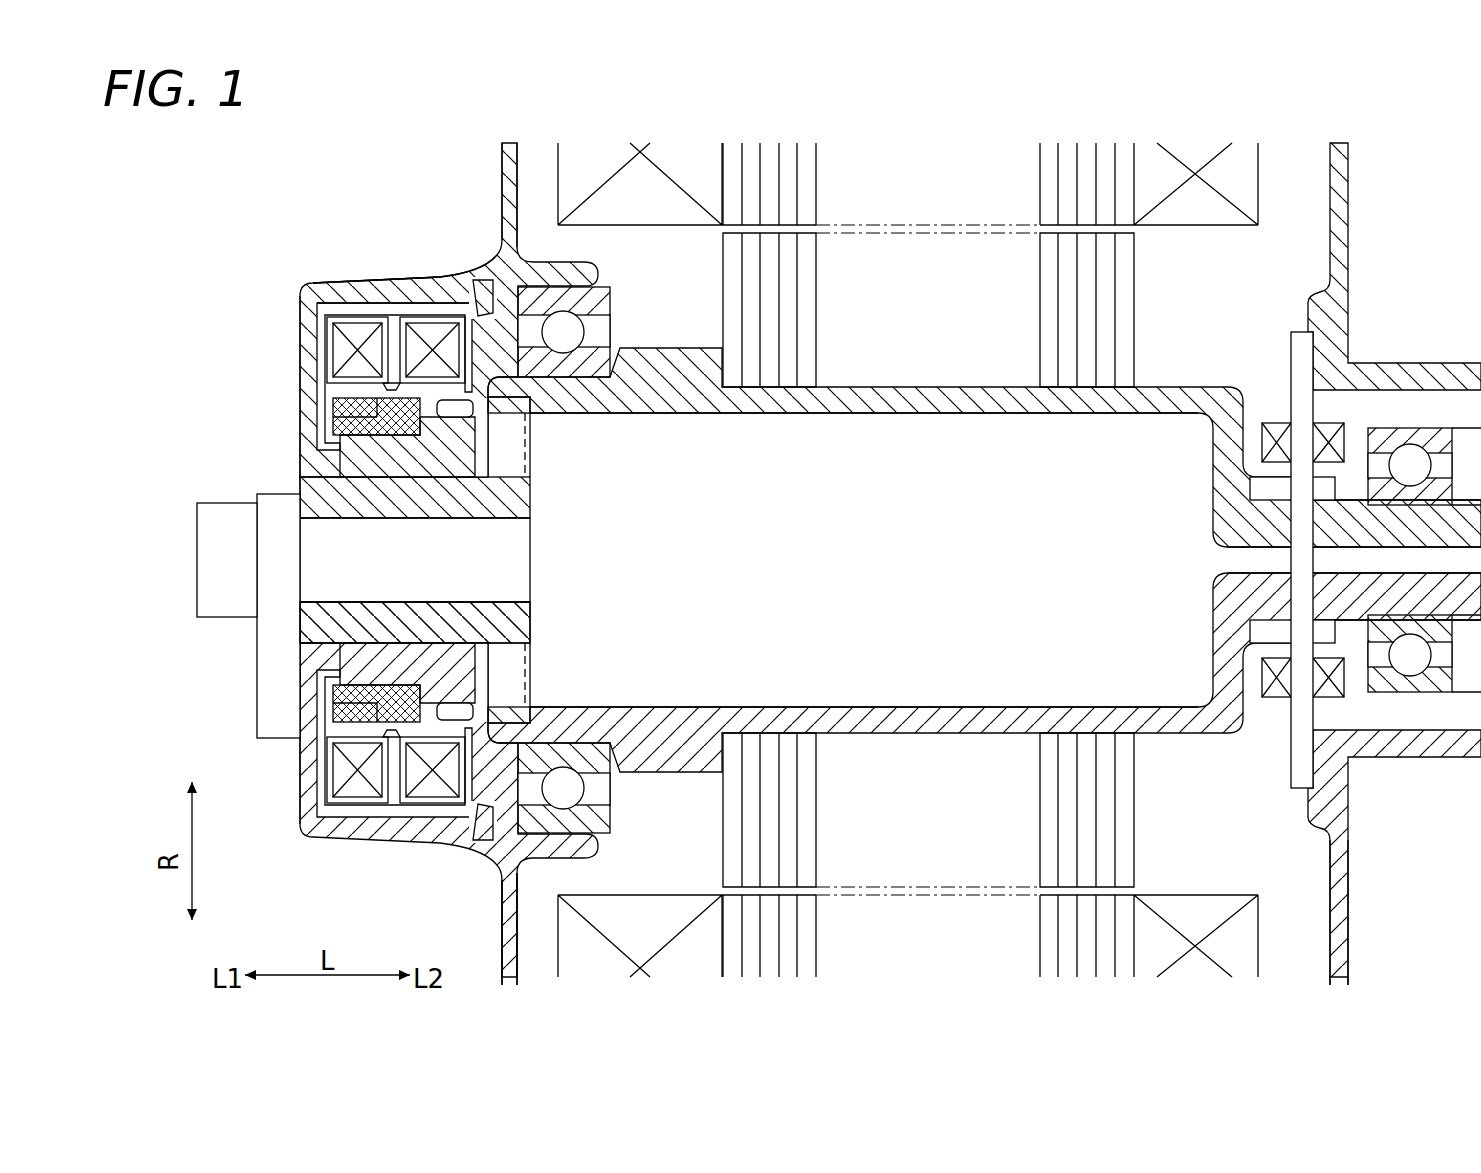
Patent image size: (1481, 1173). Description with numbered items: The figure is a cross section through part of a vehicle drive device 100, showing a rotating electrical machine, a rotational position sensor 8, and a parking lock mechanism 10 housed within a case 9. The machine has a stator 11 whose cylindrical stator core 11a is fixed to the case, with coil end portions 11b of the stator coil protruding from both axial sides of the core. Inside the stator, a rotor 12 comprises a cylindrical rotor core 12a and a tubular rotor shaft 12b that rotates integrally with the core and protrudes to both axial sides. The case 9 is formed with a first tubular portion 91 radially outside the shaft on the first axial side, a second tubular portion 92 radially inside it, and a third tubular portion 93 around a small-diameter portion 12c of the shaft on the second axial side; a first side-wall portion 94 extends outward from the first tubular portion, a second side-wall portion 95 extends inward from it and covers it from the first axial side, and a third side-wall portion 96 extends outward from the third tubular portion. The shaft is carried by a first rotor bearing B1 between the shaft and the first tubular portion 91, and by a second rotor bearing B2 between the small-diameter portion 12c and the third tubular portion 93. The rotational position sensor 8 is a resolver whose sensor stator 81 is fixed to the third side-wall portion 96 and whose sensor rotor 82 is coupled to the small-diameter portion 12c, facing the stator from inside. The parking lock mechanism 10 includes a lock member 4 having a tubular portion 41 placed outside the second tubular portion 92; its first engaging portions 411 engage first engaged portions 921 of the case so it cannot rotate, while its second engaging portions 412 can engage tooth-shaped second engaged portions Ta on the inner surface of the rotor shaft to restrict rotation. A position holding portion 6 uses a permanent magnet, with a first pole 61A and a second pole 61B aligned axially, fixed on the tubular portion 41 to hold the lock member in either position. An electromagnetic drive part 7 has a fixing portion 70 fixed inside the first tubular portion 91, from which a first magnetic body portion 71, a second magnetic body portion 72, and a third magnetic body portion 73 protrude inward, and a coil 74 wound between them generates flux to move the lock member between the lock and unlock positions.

The vehicle drive device 100 is at (292, 182).
The parking lock mechanism 10 is at (377, 243).
The case 9 is at (500, 170).
The electromagnetic drive part 7 is at (396, 300).
The fixing portion 70 is at (322, 298).
The first magnetic body portion 71 is at (323, 380).
The second magnetic body portion 72 is at (385, 386).
The third magnetic body portion 73 is at (487, 300).
The coil 74 is at (427, 788).
The position holding portion 6 is at (333, 410).
The first pole 61A is at (336, 718).
The second pole 61B is at (336, 686).
The second side-wall portion 95 is at (305, 428).
The tubular portion 41 is at (350, 465).
The first engaging portions 411 is at (492, 522).
The second engaging portions 412 is at (470, 712).
The lock member 4 is at (532, 445).
The first engaged portions 921 is at (527, 487).
The second tubular portion 92 is at (518, 620).
The second engaged portions Ta is at (520, 714).
The first tubular portion 91 is at (353, 843).
The first side-wall portion 94 is at (502, 915).
The first rotor bearing B1 is at (602, 816).
The second rotor bearing B2 is at (1401, 440).
The stator 11 is at (939, 545).
The stator core 11a is at (812, 183).
The coil end portions 11b is at (642, 216).
The rotor 12 is at (1142, 872).
The rotor core 12a is at (1122, 314).
The rotor shaft 12b is at (905, 415).
The small-diameter portion 12c is at (1280, 530).
The rotational position sensor 8 is at (1276, 388).
The sensor stator 81 is at (1290, 640).
The sensor rotor 82 is at (1275, 703).
The third tubular portion 93 is at (1405, 718).
The third side-wall portion 96 is at (1338, 880).